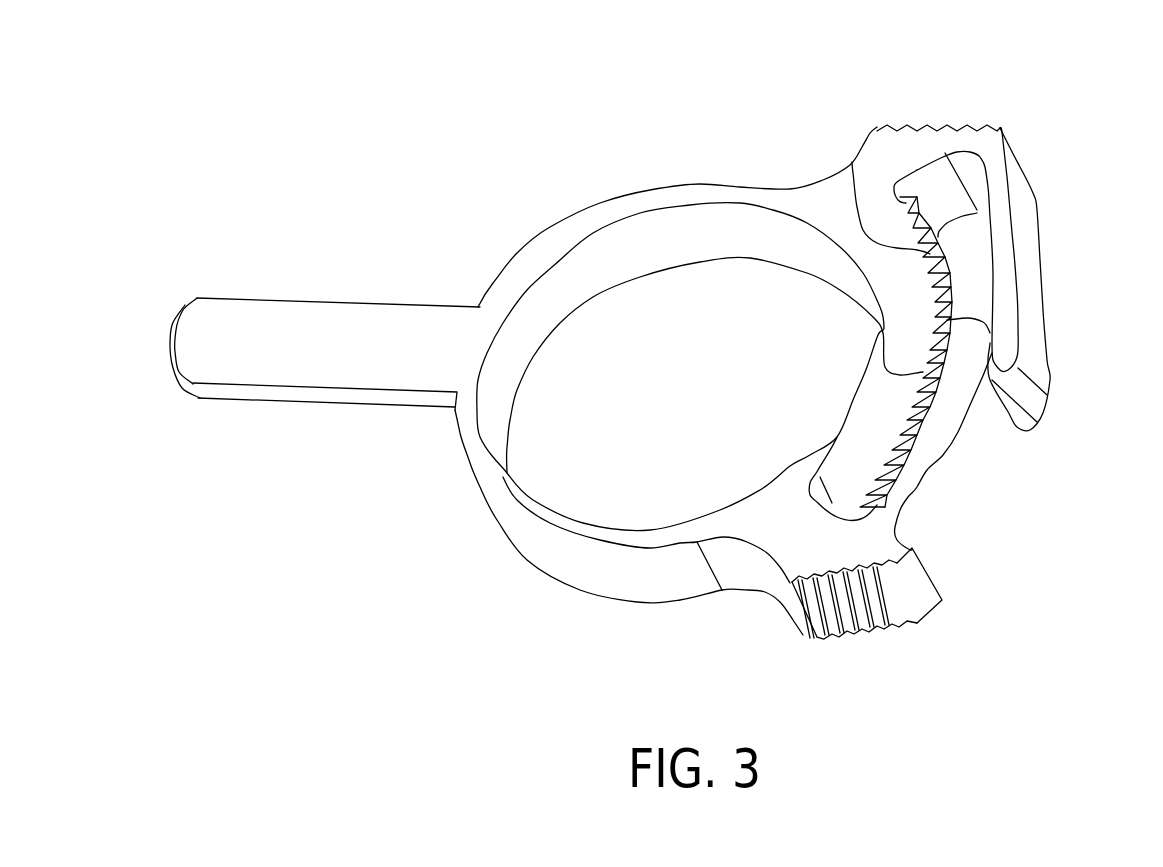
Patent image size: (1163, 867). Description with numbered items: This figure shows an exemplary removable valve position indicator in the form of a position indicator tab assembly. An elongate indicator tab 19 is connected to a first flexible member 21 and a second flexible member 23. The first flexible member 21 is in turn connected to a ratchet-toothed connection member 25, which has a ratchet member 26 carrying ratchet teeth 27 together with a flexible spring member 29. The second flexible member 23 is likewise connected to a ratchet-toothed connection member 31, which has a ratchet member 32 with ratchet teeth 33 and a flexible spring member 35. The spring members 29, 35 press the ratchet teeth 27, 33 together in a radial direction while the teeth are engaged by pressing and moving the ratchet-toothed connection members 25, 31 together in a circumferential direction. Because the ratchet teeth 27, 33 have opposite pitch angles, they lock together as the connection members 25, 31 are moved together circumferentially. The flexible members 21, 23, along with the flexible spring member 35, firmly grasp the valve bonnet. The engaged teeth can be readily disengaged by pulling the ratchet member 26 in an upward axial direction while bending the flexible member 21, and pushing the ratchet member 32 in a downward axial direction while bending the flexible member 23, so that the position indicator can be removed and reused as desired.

The indicator tab 19 is at (298, 300).
The first flexible member 21 is at (597, 202).
The second flexible member 23 is at (563, 573).
The ratchet-toothed connection member 25 is at (902, 147).
The ratchet member 26 is at (907, 298).
The ratchet teeth 27 is at (853, 163).
The flexible spring member 29 is at (1025, 225).
The ratchet-toothed connection member 31 is at (792, 563).
The ratchet member 32 is at (922, 470).
The ratchet teeth 33 is at (920, 407).
The flexible spring member 35 is at (855, 417).